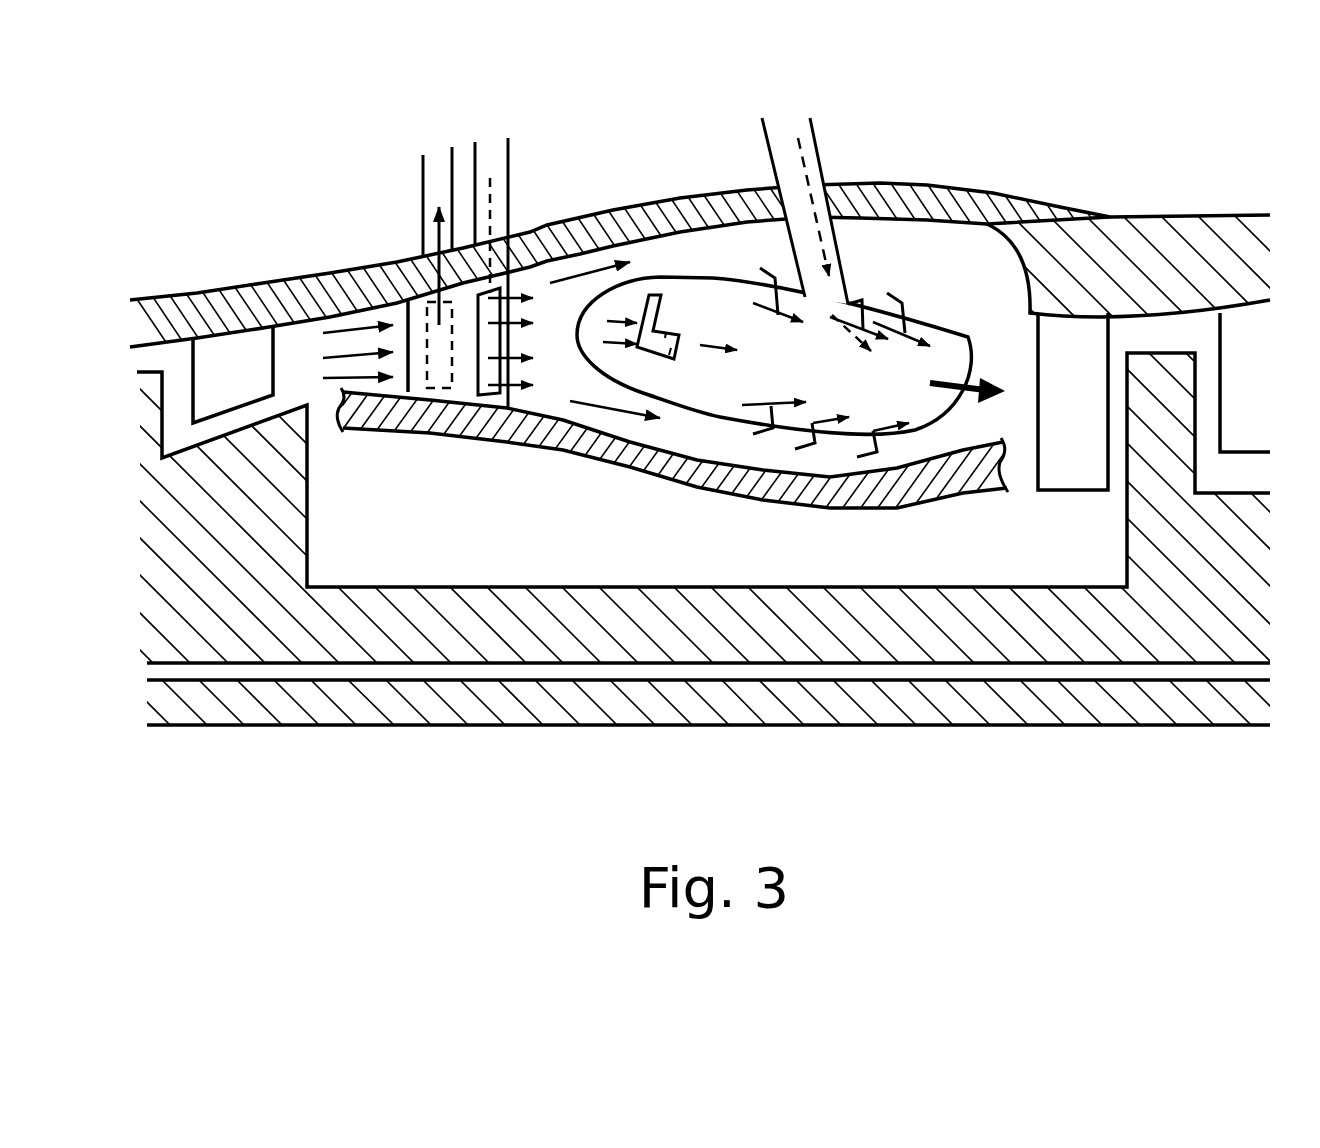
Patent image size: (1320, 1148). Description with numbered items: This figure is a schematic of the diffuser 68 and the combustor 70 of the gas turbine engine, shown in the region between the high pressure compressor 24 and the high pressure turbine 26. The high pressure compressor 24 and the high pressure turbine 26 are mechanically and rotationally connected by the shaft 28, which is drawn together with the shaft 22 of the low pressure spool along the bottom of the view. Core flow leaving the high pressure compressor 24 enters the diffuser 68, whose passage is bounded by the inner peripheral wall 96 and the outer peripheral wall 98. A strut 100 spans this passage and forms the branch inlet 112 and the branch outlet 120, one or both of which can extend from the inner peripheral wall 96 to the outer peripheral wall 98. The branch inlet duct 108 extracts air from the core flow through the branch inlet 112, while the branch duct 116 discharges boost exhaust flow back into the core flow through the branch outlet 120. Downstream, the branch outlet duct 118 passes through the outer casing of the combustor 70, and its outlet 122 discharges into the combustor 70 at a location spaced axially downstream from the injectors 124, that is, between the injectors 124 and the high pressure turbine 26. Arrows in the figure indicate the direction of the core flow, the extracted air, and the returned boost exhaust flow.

The shaft 22 is at (518, 727).
The high pressure compressor 24 is at (178, 258).
The high pressure turbine 26 is at (1167, 192).
The shaft 28 is at (707, 587).
The diffuser 68 is at (422, 460).
The combustor 70 is at (690, 278).
The inner peripheral wall 96 is at (368, 430).
The outer peripheral wall 98 is at (405, 262).
The strut 100 is at (407, 300).
The branch inlet duct 108 is at (423, 163).
The branch inlet 112 is at (442, 392).
The branch duct 116 is at (508, 168).
The branch outlet duct 118 is at (817, 140).
The branch outlet 120 is at (493, 397).
The outlet 122 is at (827, 300).
The injectors 124 is at (657, 350).